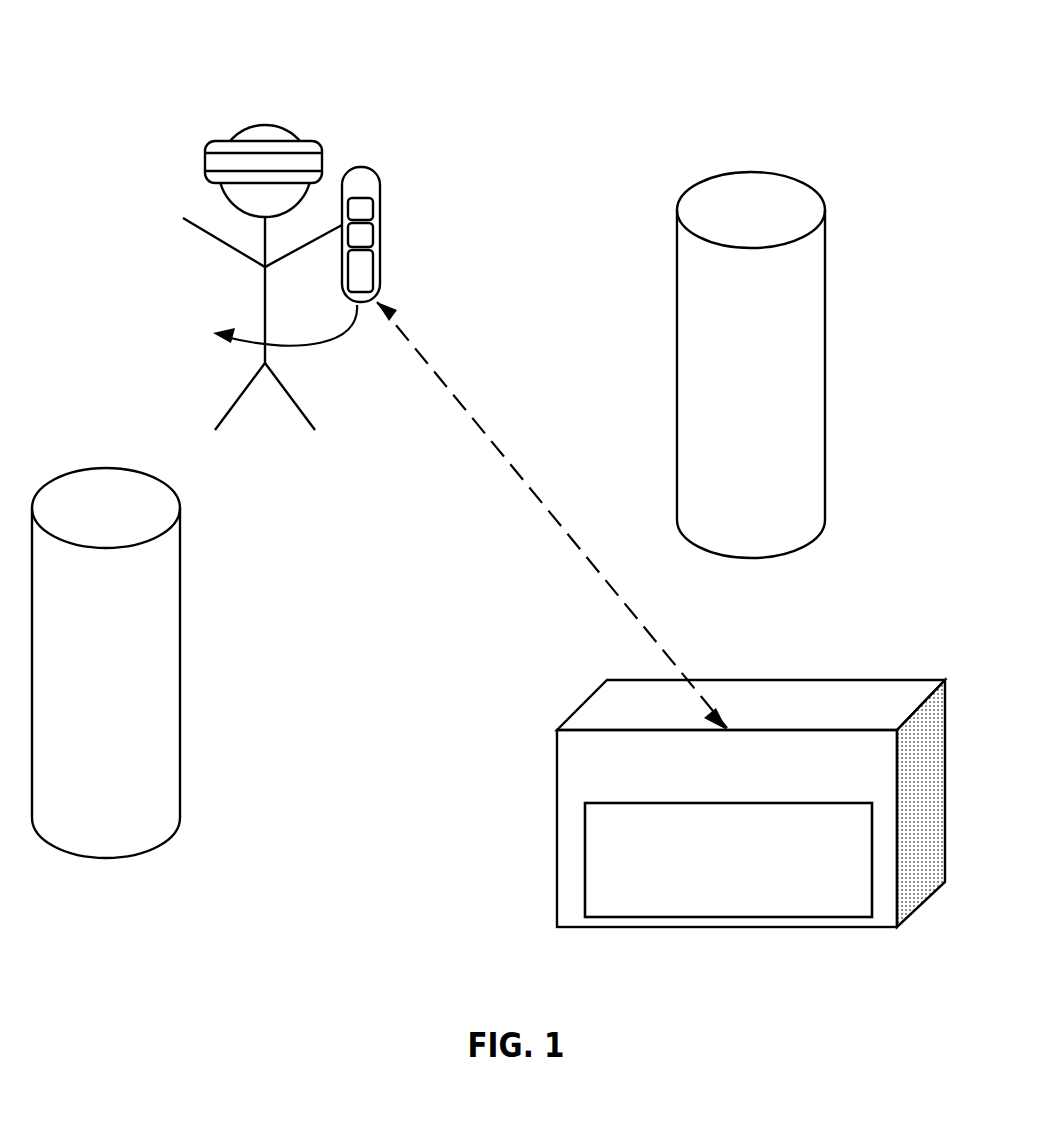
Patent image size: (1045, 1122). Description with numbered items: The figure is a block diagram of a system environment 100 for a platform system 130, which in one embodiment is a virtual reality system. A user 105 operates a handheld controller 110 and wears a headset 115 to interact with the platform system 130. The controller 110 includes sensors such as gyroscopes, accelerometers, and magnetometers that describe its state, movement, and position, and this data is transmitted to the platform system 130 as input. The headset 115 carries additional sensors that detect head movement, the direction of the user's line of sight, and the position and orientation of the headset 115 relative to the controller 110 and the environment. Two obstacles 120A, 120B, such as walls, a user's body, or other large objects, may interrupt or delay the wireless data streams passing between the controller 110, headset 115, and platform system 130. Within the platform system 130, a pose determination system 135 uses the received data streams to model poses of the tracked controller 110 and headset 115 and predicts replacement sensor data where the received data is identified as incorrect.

The system environment 100 is at (107, 20).
The user 105 is at (195, 240).
The controller 110 is at (380, 182).
The headset 115 is at (205, 162).
The obstacle 120A is at (677, 305).
The obstacle 120B is at (180, 723).
The platform system 130 is at (707, 794).
The pose determination system 135 is at (708, 901).